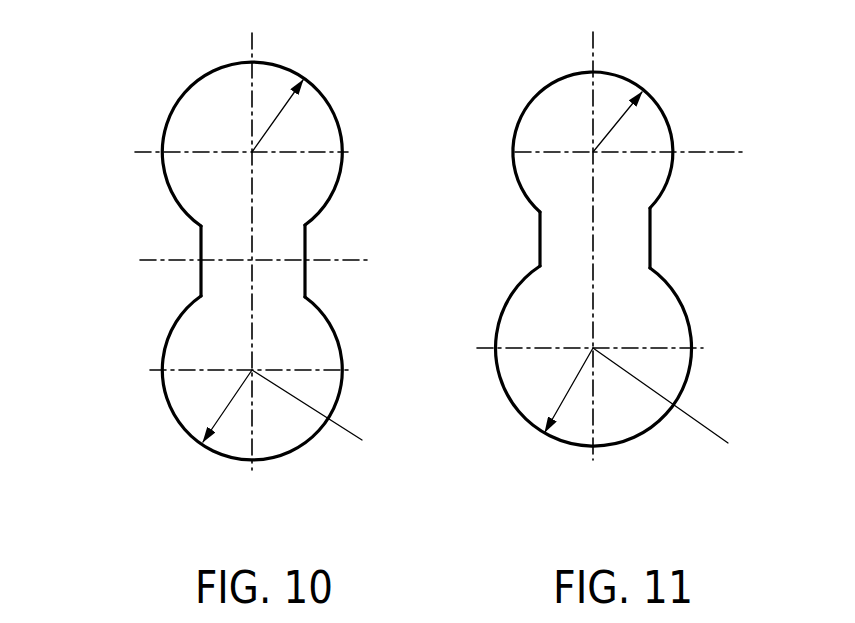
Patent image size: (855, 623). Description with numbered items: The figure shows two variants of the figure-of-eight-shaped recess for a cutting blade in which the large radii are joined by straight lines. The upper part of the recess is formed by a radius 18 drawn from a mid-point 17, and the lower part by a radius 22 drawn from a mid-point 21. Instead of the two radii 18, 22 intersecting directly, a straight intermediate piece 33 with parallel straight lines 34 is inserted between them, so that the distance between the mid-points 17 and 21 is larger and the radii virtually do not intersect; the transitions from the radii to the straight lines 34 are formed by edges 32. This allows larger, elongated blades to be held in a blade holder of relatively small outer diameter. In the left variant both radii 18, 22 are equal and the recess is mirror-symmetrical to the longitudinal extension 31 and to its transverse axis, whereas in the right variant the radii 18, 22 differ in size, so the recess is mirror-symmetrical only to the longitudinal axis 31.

In FIG. 10, the mid-point 17 is at (252, 152).
In FIG. 11, the mid-point 17 is at (593, 152).
In FIG. 10, the radius 18 is at (278, 110).
In FIG. 11, the radius 18 is at (617, 125).
In FIG. 10, the mid-point 21 is at (283, 423).
In FIG. 11, the mid-point 21 is at (639, 416).
In FIG. 10, the radius 22 is at (155, 423).
In FIG. 11, the radius 22 is at (532, 417).
In FIG. 10, the longitudinal extension 31 is at (252, 42).
In FIG. 11, the longitudinal extension 31 is at (593, 52).
In FIG. 10, the edges 32 is at (201, 225).
In FIG. 11, the edges 32 is at (594, 259).
In FIG. 10, the straight intermediate piece 33 is at (262, 268).
In FIG. 11, the straight intermediate piece 33 is at (613, 237).
In FIG. 10, the parallel straight lines 34 is at (200, 287).
In FIG. 11, the parallel straight lines 34 is at (538, 232).